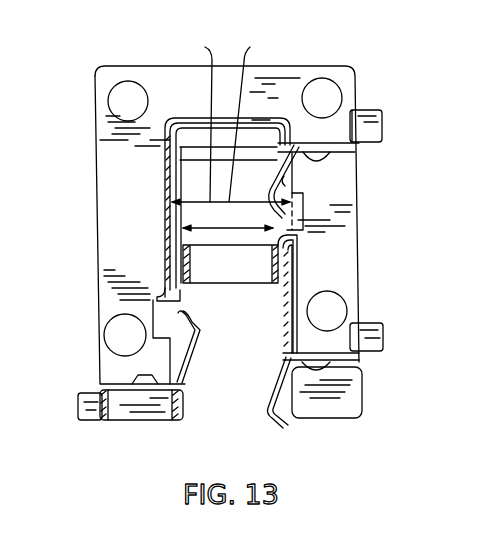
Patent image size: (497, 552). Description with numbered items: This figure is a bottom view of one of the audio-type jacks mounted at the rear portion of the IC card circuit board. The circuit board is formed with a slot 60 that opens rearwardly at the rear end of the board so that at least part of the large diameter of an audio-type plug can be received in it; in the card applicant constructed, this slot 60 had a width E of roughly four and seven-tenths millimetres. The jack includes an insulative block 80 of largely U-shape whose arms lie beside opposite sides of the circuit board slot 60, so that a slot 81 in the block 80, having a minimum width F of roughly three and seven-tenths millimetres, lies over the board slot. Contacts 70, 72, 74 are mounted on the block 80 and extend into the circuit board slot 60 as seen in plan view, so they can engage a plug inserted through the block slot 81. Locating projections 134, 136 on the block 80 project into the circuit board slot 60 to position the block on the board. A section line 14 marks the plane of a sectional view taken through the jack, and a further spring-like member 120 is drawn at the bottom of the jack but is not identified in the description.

The insulative block 80 is at (95, 114).
The block slot 81 is at (190, 176).
The locating projection 134 is at (180, 247).
The locating projection 136 is at (283, 267).
The circuit board slot 60 is at (303, 185).
The contact 70 is at (370, 142).
The contact 72 is at (92, 392).
The contact 74 is at (380, 322).
The spring strip 120 is at (270, 415).
The section line 14- 14 is at (82, 448).